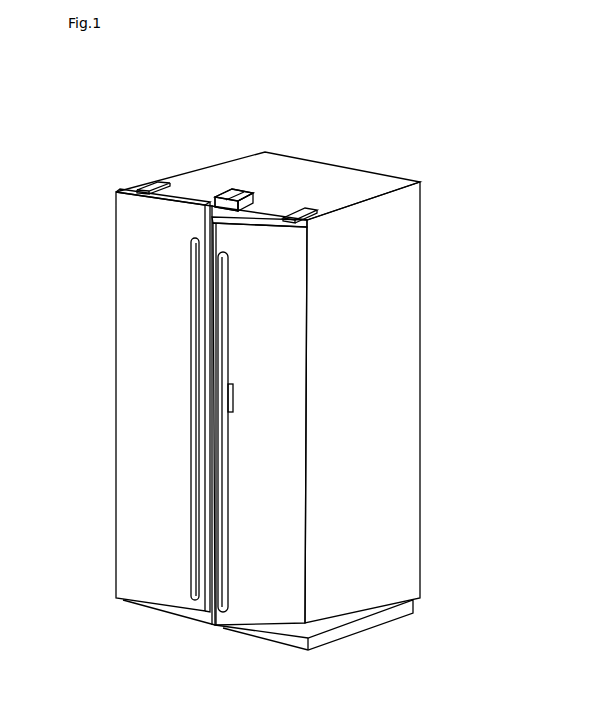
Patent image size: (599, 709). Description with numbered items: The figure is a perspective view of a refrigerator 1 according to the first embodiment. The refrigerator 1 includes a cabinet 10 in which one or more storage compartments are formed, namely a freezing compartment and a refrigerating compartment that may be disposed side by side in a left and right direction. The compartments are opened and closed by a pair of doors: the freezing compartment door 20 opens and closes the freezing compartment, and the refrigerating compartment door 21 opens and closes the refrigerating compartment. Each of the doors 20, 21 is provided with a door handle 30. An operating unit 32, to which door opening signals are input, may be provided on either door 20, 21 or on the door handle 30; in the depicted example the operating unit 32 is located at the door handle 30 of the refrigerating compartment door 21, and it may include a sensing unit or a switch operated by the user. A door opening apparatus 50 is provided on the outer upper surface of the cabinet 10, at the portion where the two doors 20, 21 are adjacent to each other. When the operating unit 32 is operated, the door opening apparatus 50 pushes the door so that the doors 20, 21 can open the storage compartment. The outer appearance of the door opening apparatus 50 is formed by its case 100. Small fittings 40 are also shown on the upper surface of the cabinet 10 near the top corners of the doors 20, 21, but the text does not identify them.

The refrigerator 1 is at (408, 164).
The cabinet 10 is at (403, 310).
The freezing compartment door 20 is at (130, 222).
The refrigerating compartment door 21 is at (297, 270).
The door handle 30 is at (191, 422).
The operating unit 32 is at (240, 397).
The upper hinge 40 is at (150, 181).
The door opening apparatus 50 is at (240, 186).
The case 100 is at (256, 208).